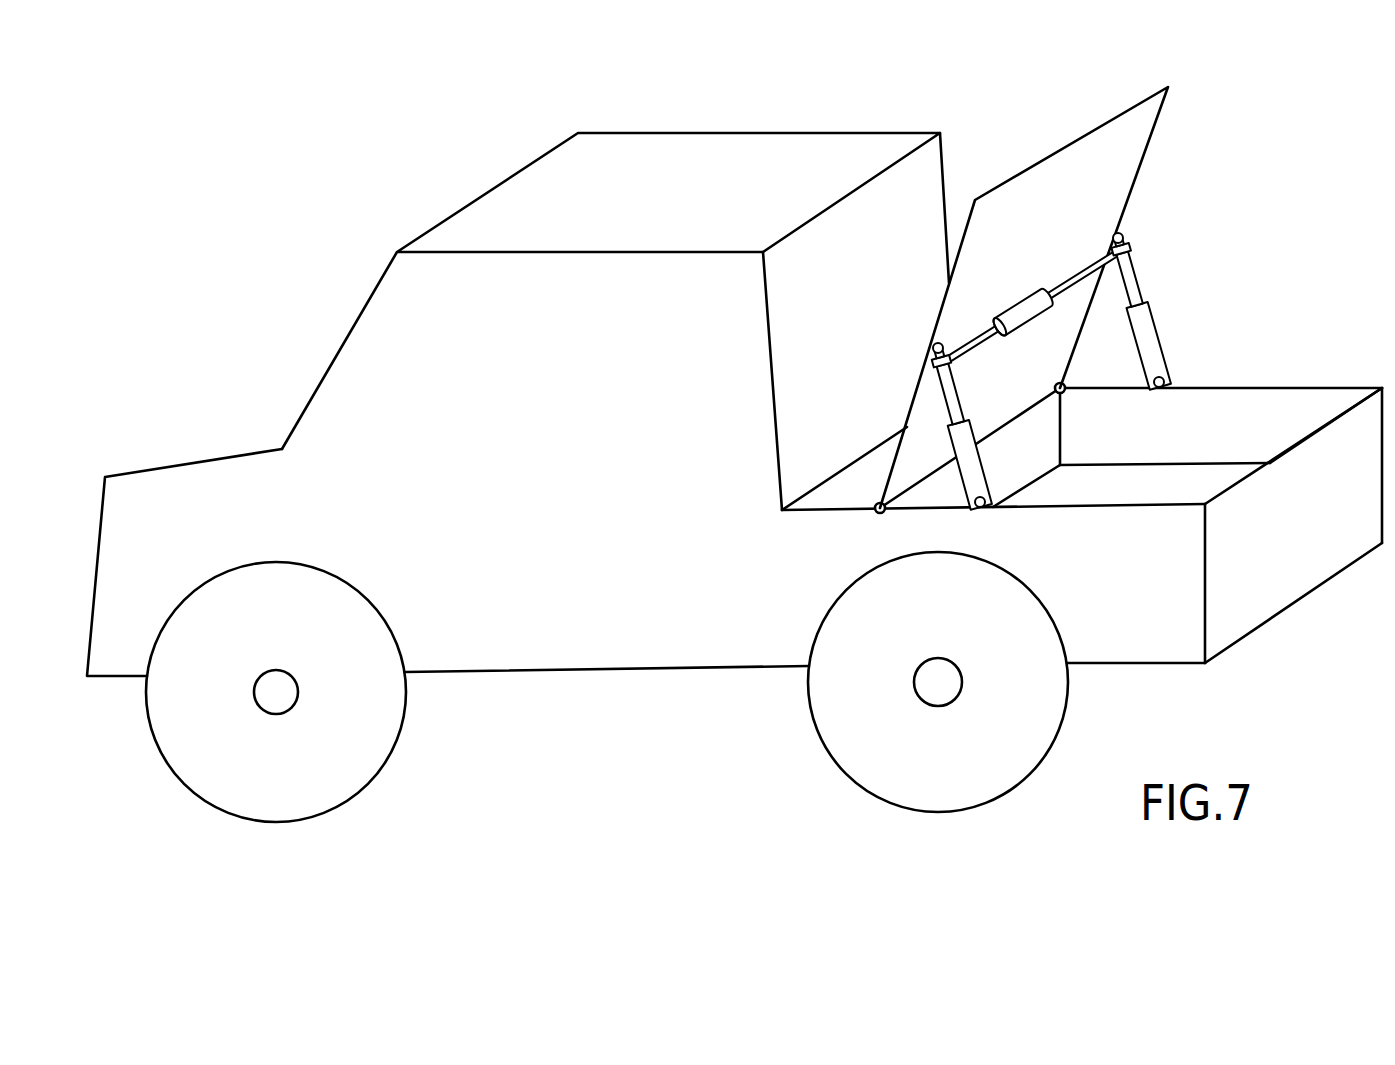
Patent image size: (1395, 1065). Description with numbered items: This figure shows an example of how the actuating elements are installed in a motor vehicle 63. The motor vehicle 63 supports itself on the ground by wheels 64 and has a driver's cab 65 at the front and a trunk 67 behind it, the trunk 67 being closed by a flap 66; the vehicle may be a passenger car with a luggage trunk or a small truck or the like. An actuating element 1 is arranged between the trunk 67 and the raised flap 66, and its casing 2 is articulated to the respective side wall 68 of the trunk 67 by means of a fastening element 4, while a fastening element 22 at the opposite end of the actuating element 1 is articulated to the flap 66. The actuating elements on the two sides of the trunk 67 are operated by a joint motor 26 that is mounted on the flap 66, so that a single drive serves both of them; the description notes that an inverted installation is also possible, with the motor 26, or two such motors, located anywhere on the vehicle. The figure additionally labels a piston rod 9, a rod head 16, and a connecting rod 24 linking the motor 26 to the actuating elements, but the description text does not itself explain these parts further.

The actuating element 1 is at (1042, 430).
The casing 2 is at (1186, 308).
The fastening element 4 is at (1168, 380).
The piston rod 9 is at (957, 392).
The piston rod head 16 is at (1128, 254).
The fastening element 22 is at (932, 349).
The connecting rod 24 is at (1031, 291).
The joint motor 26 is at (1028, 306).
The motor vehicle 63 is at (620, 682).
The wheels 64 is at (358, 757).
The driver's cab 65 is at (574, 338).
The flap 66 is at (1076, 195).
The trunk 67 is at (1082, 504).
The side wall 68 is at (1194, 439).